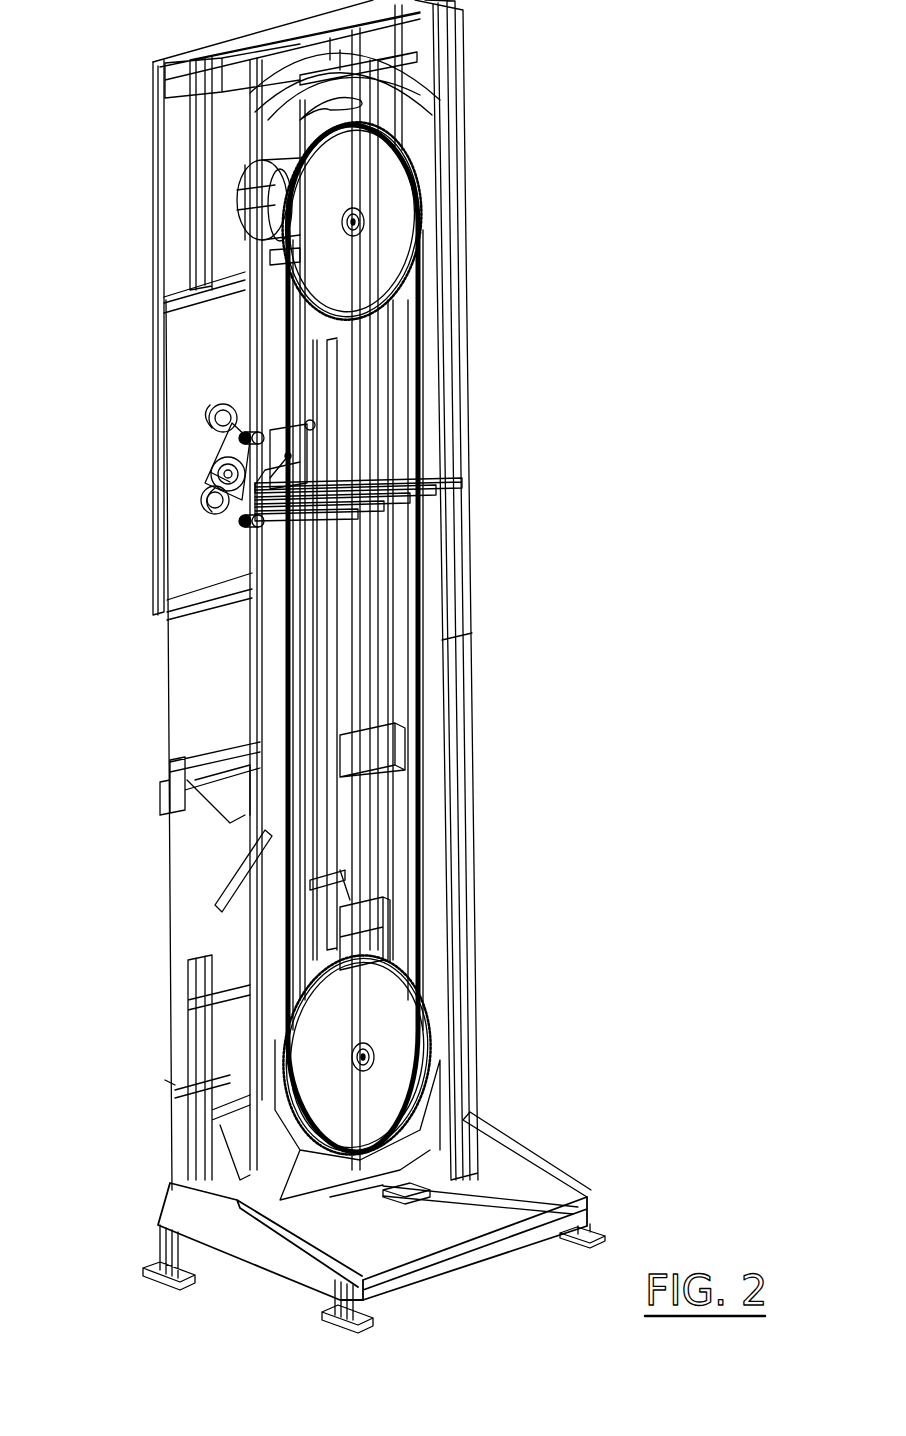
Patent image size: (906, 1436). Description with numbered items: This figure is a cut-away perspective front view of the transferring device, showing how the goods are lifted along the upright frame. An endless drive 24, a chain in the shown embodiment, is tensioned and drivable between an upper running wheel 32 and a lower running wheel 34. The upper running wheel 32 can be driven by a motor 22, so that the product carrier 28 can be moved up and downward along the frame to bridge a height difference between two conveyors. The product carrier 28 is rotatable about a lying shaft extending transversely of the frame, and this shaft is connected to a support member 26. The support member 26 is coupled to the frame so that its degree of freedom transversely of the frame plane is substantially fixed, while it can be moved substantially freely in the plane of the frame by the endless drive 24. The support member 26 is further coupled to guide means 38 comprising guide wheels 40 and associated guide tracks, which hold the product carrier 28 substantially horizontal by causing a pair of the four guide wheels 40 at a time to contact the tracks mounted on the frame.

The motor 22 is at (235, 188).
The endless drive 24 is at (418, 334).
The support member 26 is at (240, 565).
The product carrier 28 is at (422, 457).
The upper running wheel 32 is at (393, 224).
The lower running wheel 34 is at (396, 1060).
The guide means 38 is at (197, 456).
The guide wheels 40 is at (228, 404).